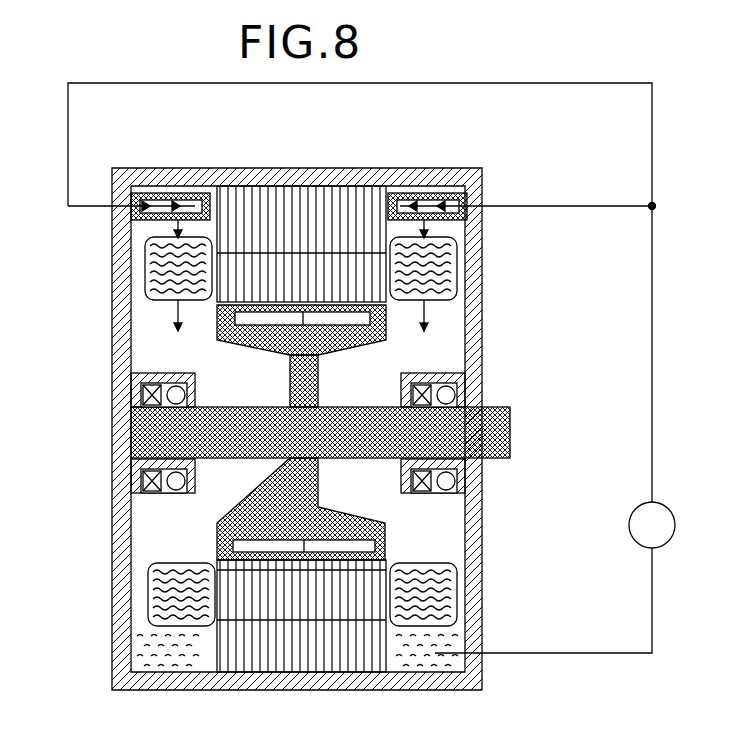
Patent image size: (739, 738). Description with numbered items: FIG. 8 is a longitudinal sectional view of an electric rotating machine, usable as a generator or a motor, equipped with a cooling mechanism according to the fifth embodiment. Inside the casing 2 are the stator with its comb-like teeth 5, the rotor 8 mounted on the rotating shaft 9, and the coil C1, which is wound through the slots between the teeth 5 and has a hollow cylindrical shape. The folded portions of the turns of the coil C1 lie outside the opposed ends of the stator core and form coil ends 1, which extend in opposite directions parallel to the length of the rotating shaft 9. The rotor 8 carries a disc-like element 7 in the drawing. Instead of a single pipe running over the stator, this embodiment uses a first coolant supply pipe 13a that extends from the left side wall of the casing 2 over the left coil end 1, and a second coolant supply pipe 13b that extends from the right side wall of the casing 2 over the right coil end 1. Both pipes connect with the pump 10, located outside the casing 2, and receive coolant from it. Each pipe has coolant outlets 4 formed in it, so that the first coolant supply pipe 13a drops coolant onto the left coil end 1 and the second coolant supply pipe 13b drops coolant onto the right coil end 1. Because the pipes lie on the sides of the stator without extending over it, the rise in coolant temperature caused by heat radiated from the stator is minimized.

The coil end 1 is at (143, 283).
The casing 2 is at (112, 365).
The coolant outlet 4 is at (128, 222).
The teeth 5 is at (263, 215).
The rotor disc 7 is at (386, 330).
The rotor 8 is at (372, 348).
The rotating shaft 9 is at (512, 428).
The pump 10 is at (632, 530).
The first coolant supply pipe 13a is at (152, 203).
The second coolant supply pipe 13b is at (408, 208).
The coil C1 is at (256, 340).